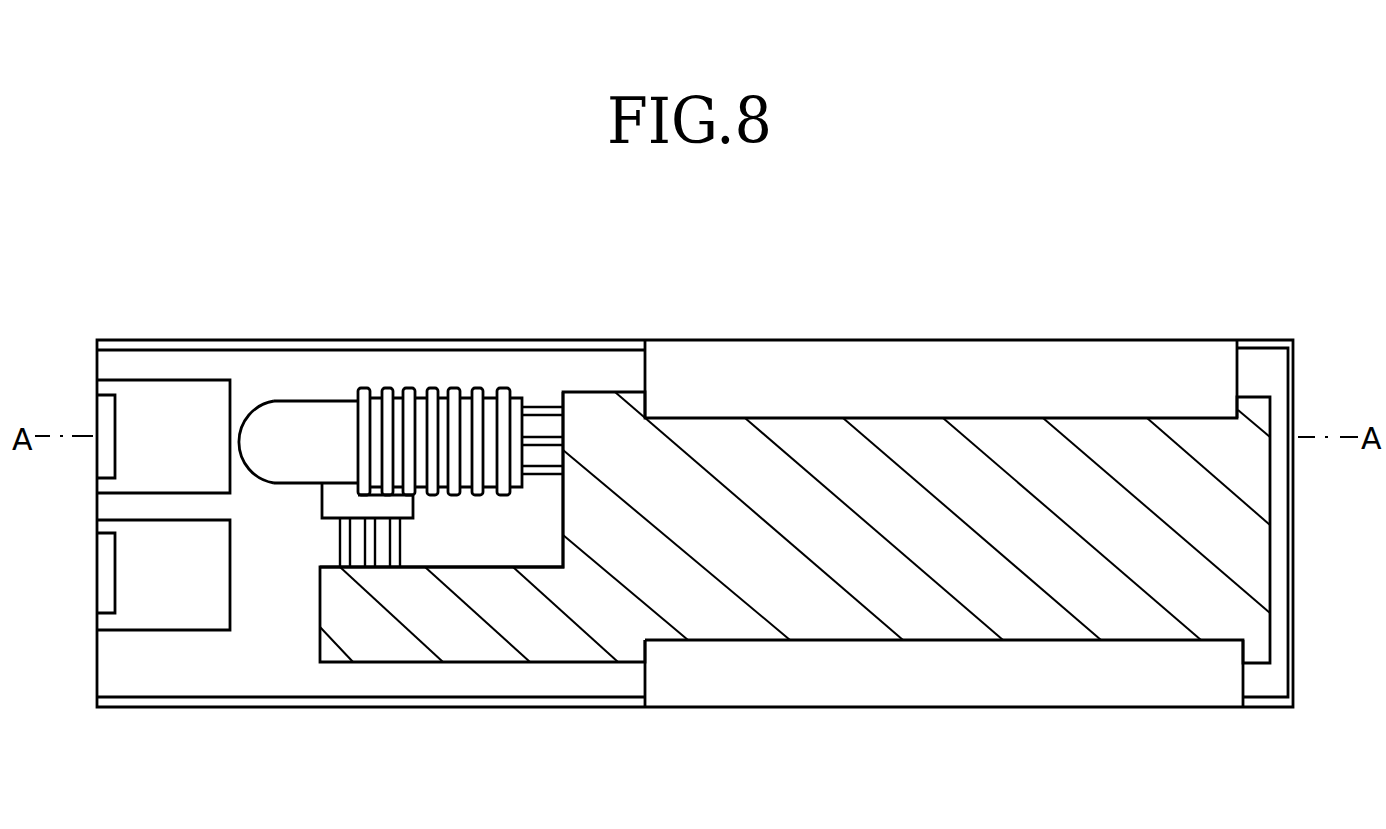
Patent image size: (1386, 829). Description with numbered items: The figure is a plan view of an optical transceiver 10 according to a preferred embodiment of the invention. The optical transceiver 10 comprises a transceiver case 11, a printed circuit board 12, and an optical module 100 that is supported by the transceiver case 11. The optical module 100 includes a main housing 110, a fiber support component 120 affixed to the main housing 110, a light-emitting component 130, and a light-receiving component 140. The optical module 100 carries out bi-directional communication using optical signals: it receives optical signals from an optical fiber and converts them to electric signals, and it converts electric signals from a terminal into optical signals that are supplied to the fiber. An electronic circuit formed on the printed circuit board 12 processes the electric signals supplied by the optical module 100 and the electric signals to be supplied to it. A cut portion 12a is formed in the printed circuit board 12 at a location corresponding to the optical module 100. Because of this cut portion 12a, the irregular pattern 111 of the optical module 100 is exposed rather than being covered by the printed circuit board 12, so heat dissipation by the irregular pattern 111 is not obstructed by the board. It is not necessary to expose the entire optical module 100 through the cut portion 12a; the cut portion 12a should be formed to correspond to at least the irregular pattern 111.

The optical transceiver 10 is at (1068, 210).
The transceiver case 11 is at (532, 708).
The printed circuit board 12 is at (602, 402).
The cut portion 12a is at (533, 542).
The optical module 100 is at (303, 360).
The main housing 110 is at (325, 402).
The irregular pattern 111 is at (458, 390).
The fiber support component 120 is at (257, 485).
The light-emitting component 130 is at (518, 402).
The light-receiving component 140 is at (328, 517).